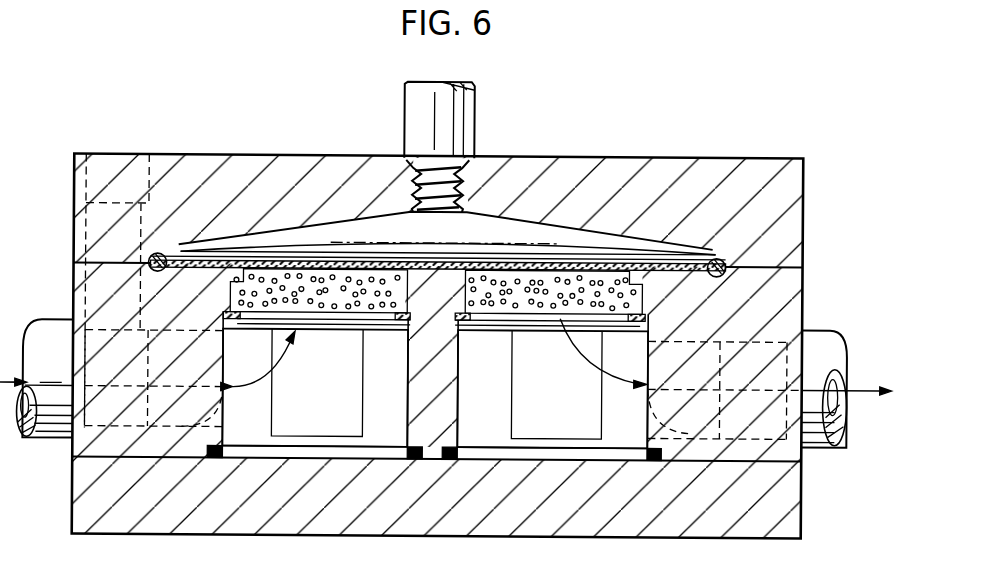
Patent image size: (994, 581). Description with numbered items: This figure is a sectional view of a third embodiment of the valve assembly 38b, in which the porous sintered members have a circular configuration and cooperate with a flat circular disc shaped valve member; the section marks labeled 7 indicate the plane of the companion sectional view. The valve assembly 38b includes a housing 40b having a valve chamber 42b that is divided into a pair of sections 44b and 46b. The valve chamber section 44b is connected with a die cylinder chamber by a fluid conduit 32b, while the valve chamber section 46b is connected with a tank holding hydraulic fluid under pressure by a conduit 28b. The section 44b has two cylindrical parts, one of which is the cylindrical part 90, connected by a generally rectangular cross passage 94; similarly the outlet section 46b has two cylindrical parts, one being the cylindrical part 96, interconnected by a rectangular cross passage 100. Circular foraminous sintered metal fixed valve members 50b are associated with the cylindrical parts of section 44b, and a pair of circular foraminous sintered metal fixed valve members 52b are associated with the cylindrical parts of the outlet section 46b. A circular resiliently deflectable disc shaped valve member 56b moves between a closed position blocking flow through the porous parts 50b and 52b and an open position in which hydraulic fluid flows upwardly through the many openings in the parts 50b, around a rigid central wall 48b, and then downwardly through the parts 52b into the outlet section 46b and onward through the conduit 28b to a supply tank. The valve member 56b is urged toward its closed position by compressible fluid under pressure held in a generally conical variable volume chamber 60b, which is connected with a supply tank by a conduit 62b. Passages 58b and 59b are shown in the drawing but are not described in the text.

The section line for FIG. 7 is at (115, 75).
The conduit 28b is at (841, 334).
The fluid conduit 32b is at (50, 324).
The valve assembly 38b is at (676, 94).
The housing 40b is at (770, 172).
The valve chamber 42b is at (226, 464).
The valve chamber section 44b is at (328, 462).
The valve chamber section 46b is at (560, 462).
The rigid central wall 48b is at (430, 352).
The circular foraminous sintered metal fixed valve members 50b is at (258, 288).
The circular foraminous sintered metal fixed valve members 52b is at (625, 295).
The disc shaped valve member 56b is at (338, 250).
The inlet passage 58b is at (212, 376).
The outlet passage 59b is at (639, 376).
The variable volume chamber 60b is at (490, 226).
The conduit 62b is at (473, 115).
The cylindrical part 90 is at (382, 425).
The cross passage 94 is at (331, 419).
The cylindrical part 96 is at (655, 345).
The rectangular cross passage 100 is at (583, 397).